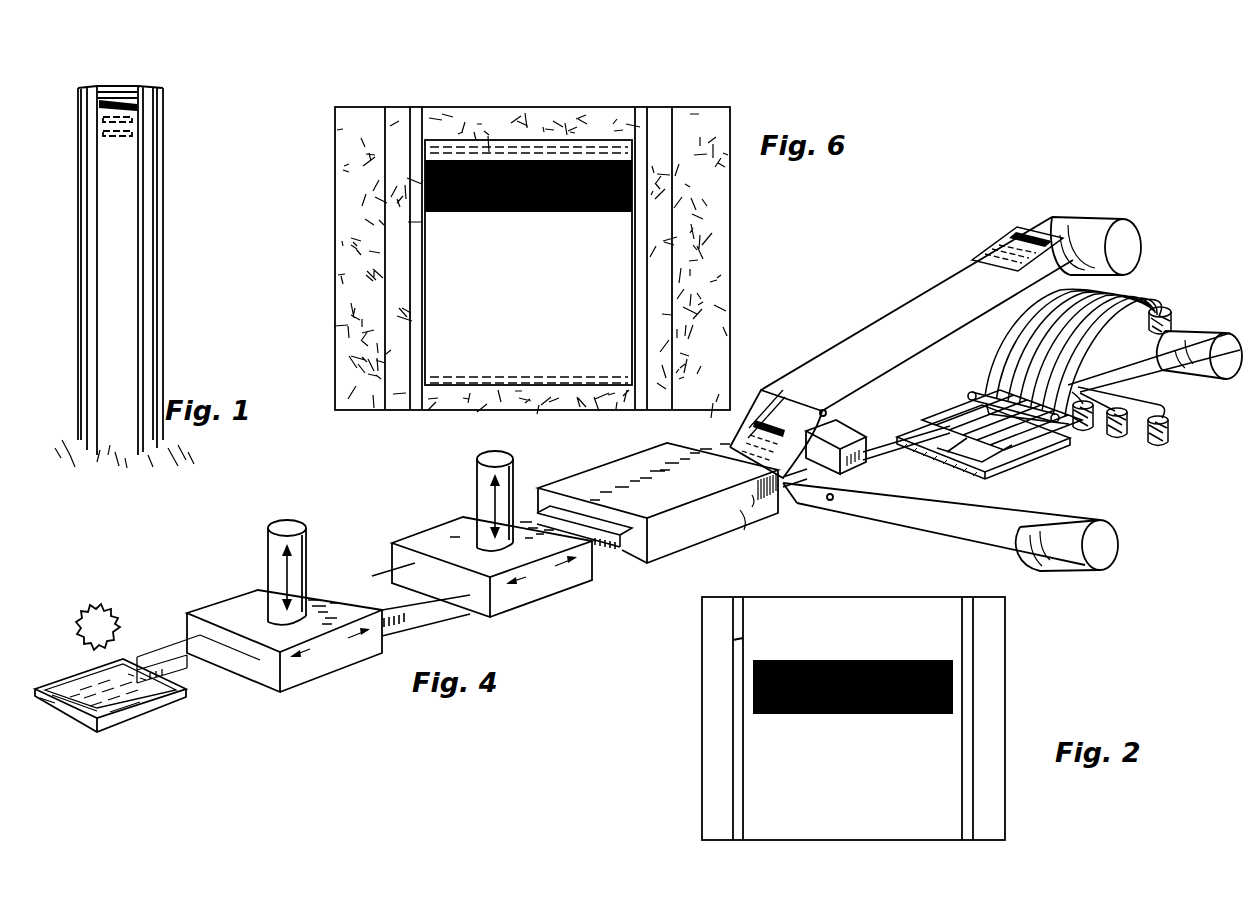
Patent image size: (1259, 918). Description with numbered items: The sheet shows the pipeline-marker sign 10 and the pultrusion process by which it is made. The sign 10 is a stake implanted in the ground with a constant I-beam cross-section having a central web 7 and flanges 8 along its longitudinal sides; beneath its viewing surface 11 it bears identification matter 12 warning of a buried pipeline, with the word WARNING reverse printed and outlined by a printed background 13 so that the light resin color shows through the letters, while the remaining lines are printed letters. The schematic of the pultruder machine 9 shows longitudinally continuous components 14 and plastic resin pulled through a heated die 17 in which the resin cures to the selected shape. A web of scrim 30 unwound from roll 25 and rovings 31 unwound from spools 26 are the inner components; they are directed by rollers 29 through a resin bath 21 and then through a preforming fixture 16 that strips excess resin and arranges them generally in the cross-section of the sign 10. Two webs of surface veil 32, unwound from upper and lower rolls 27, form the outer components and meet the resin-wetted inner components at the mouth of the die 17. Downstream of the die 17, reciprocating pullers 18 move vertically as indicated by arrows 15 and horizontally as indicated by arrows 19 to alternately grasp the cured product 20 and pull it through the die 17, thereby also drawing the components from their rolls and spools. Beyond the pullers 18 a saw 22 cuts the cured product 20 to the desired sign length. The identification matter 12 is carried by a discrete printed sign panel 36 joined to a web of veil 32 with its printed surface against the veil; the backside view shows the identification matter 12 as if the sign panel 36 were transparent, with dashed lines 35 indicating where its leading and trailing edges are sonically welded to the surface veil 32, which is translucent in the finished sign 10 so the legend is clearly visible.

In FIG. 1, the central web 7 is at (120, 88).
In FIG. 2, the central web 7 is at (853, 701).
In FIG. 1, the flanges 8 is at (152, 93).
In FIG. 2, the flanges 8 is at (985, 607).
In FIG. 1, the pultruder machine 9 is at (108, 90).
In FIG. 4, the pultruder machine 9 is at (658, 531).
In FIG. 1, the sign 10 is at (141, 259).
In FIG. 2, the sign 10 is at (862, 705).
In FIG. 4, the sign 10 is at (140, 720).
In FIG. 1, the viewing surface 11 is at (123, 143).
In FIG. 2, the viewing surface 11 is at (755, 630).
In FIG. 1, the identification matter 12 is at (123, 101).
In FIG. 2, the identification matter 12 is at (853, 656).
In FIG. 2, the printed background 13 is at (888, 660).
In FIG. 4, the longitudinally continuous components 14 is at (798, 489).
In FIG. 4, the arrows 15 is at (366, 538).
In FIG. 4, the preforming fixture 16 is at (836, 436).
In FIG. 4, the heated die 17 is at (760, 505).
In FIG. 4, the reciprocating pullers 18 is at (477, 466).
In FIG. 4, the arrows 19 is at (312, 648).
In FIG. 4, the cured product 20 is at (380, 597).
In FIG. 4, the resin bath 21 is at (986, 479).
In FIG. 4, the saw 22 is at (116, 622).
In FIG. 4, the roll 25 is at (1226, 380).
In FIG. 4, the spools 26 is at (1164, 312).
In FIG. 4, the upper and lower rolls 27 is at (1141, 248).
In FIG. 4, the rollers 29 is at (1046, 446).
In FIG. 4, the web of scrim 30 is at (1224, 332).
In FIG. 4, the rovings 31 is at (998, 344).
In FIG. 6, the surface veil 32 is at (612, 110).
In FIG. 4, the surface veil 32 is at (932, 289).
In FIG. 6, the dashed lines 35 is at (553, 145).
In FIG. 6, the sign panel 36 is at (483, 145).
In FIG. 4, the sign panel 36 is at (1020, 234).